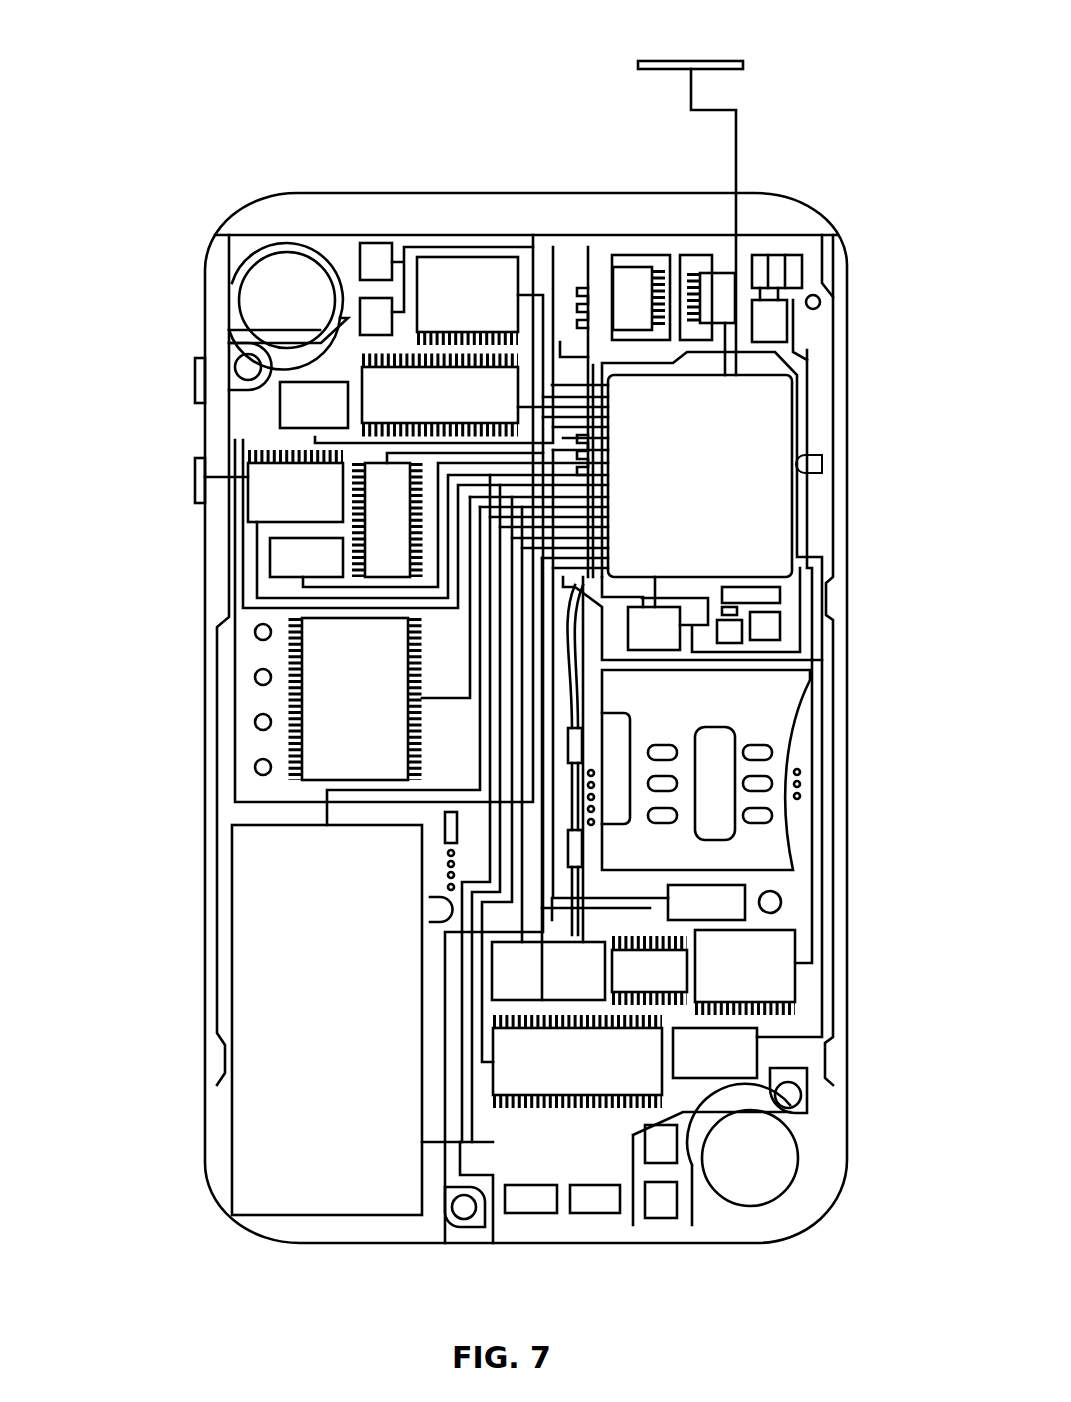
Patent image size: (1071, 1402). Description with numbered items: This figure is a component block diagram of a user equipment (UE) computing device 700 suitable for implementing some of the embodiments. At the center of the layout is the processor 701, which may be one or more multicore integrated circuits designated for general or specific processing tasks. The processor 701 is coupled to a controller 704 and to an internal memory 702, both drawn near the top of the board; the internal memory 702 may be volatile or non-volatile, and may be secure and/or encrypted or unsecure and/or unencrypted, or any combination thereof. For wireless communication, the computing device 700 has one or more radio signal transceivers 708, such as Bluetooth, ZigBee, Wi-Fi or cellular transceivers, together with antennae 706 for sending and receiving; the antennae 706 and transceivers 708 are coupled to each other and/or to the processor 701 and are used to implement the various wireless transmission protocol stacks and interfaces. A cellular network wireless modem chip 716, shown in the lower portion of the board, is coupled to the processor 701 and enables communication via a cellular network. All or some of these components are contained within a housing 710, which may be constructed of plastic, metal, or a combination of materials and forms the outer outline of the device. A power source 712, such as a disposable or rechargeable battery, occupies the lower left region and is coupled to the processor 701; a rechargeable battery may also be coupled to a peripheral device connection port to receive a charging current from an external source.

The computing device 700 is at (160, 107).
The processor 701 is at (700, 476).
The internal memory 702 is at (461, 345).
The controller 704 is at (512, 327).
The antennae 706 is at (736, 145).
The radio signal transceivers 708 is at (740, 270).
The housing 710 is at (848, 1082).
The power source 712 is at (362, 1020).
The cellular network wireless modem chip 716 is at (577, 1062).